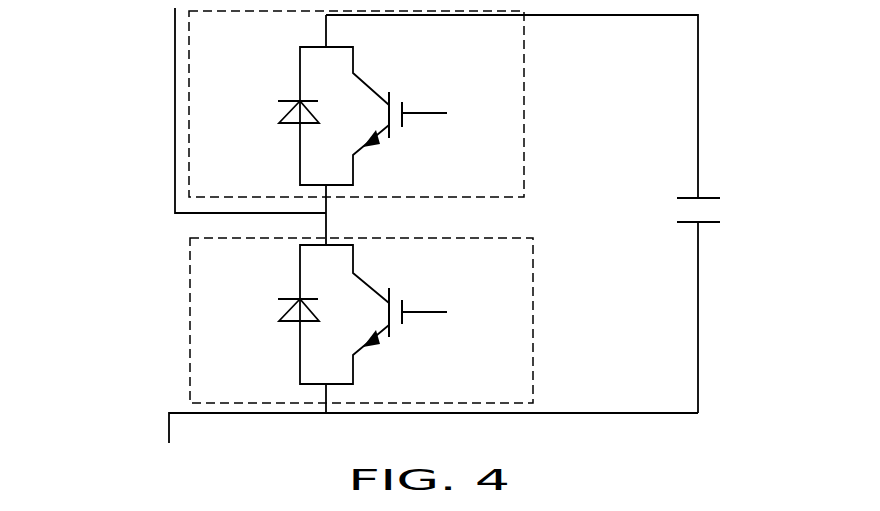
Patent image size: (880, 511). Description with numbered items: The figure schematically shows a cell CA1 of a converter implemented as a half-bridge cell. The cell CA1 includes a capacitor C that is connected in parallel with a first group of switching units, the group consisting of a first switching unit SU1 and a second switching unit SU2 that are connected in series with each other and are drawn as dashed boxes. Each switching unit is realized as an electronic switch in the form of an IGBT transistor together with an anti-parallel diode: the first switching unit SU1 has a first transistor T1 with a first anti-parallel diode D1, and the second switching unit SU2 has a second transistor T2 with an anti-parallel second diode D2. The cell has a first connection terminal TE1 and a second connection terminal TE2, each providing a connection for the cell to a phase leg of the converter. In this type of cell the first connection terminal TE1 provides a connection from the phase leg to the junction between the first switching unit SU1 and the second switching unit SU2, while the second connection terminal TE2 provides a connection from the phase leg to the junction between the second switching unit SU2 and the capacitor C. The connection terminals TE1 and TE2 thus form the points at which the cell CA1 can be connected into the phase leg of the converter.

The first connection terminal TE1 is at (185, 110).
The second connection terminal TE2 is at (376, 438).
The first switching unit SU1 is at (524, 133).
The second switching unit SU2 is at (531, 351).
The first anti-parallel diode D1 is at (276, 116).
The second diode D2 is at (276, 314).
The first transistor T1 is at (390, 116).
The second transistor T2 is at (390, 314).
The capacitor C is at (676, 212).
The cell CA1 is at (722, 97).